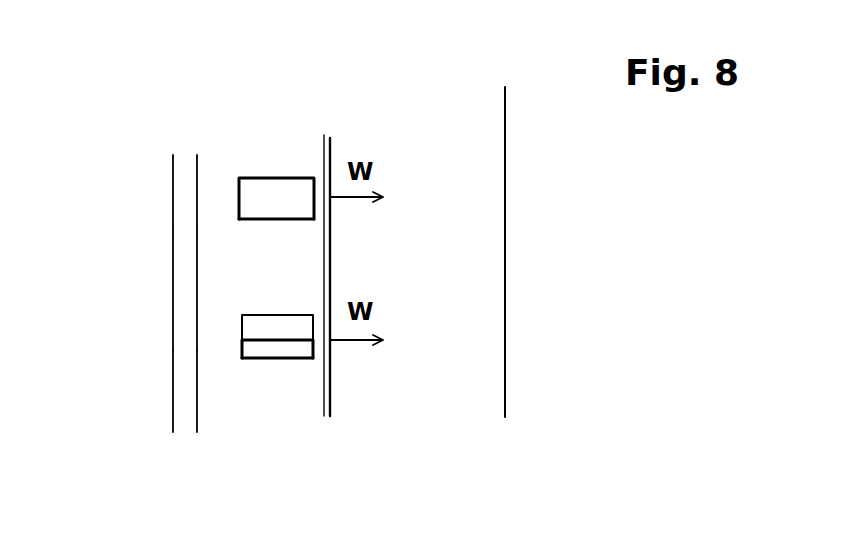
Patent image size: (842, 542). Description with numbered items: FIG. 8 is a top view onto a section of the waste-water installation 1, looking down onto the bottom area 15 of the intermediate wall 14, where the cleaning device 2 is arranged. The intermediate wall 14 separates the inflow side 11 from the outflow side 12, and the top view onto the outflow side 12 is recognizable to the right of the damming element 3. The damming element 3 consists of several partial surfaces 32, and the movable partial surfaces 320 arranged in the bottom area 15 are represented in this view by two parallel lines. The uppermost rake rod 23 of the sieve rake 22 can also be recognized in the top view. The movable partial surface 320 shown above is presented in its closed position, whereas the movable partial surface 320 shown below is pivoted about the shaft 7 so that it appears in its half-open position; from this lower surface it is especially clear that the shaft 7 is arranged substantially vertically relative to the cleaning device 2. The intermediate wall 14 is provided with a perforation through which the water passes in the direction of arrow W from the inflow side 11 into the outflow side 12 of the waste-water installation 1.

The waste-water installation 1 is at (140, 97).
The cleaning device 2 is at (185, 288).
The damming element 3 is at (330, 152).
The shaft 7 is at (260, 220).
The inflow side 11 is at (127, 382).
The outflow side 12 is at (455, 290).
The intermediate wall 14 is at (288, 413).
The bottom area 15 is at (242, 288).
The sieve rake 22 is at (183, 192).
The rake rod 23 is at (187, 393).
The partial surface 32 is at (258, 193).
The movable partial surface 320 is at (293, 193).